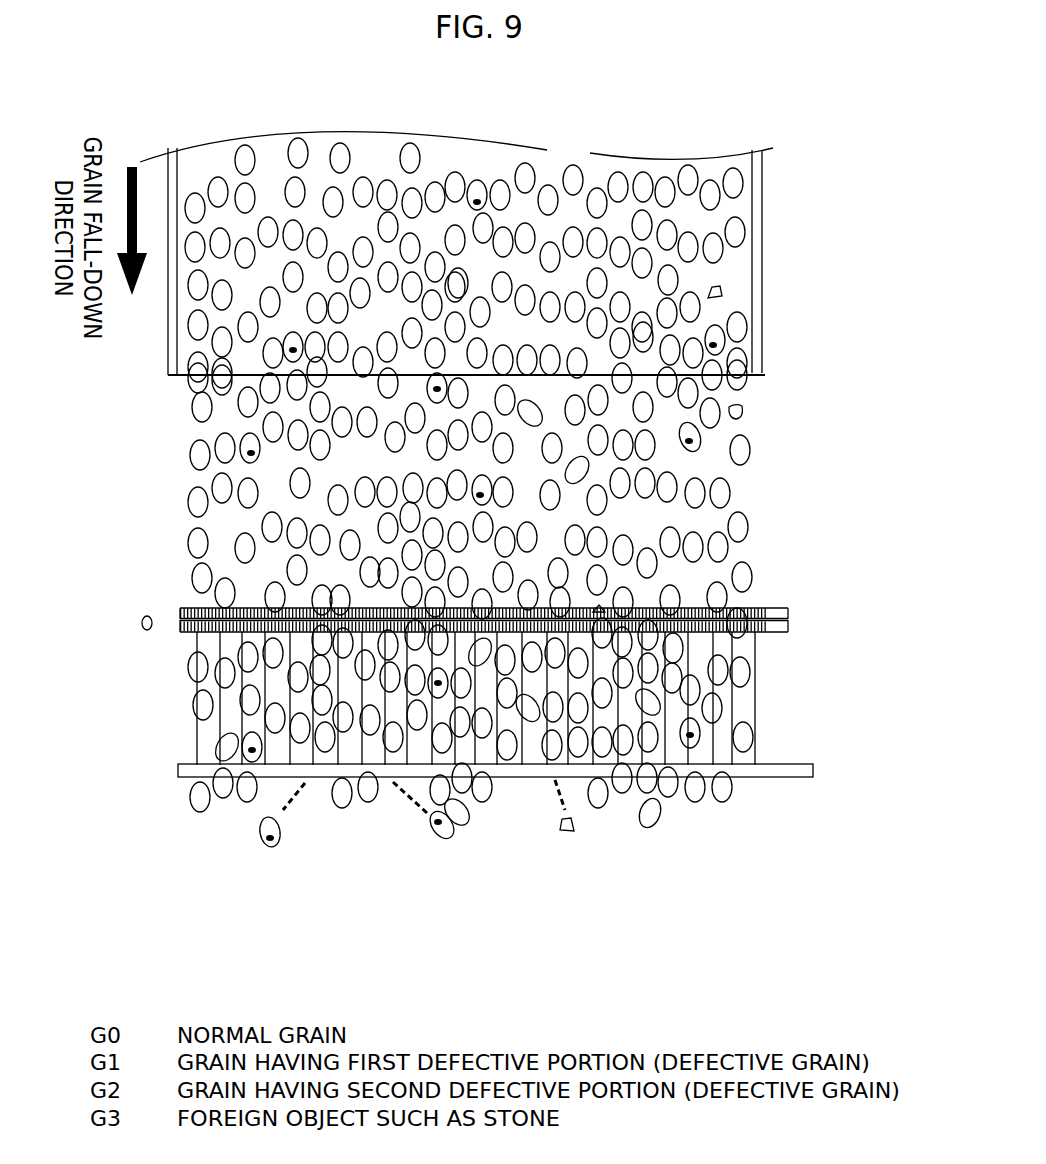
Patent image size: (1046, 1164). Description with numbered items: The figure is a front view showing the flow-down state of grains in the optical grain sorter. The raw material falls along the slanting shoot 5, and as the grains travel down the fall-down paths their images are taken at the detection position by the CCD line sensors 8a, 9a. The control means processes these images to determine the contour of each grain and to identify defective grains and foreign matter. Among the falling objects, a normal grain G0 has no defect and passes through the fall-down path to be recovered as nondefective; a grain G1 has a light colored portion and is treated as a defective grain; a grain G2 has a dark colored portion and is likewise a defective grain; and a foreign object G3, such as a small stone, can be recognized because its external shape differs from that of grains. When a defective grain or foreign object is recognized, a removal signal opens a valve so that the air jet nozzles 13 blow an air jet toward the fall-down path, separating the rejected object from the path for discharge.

The slanting shoot 5 is at (847, 119).
The CCD line sensor 8a is at (788, 607).
The CCD line sensor 9a is at (788, 632).
The air jet nozzles 13 is at (795, 764).
The normal grain G0 is at (737, 232).
The grain having a light colored portion G1 is at (698, 437).
The grain having a dark colored portion G2 is at (478, 192).
The foreign object G3 is at (722, 288).